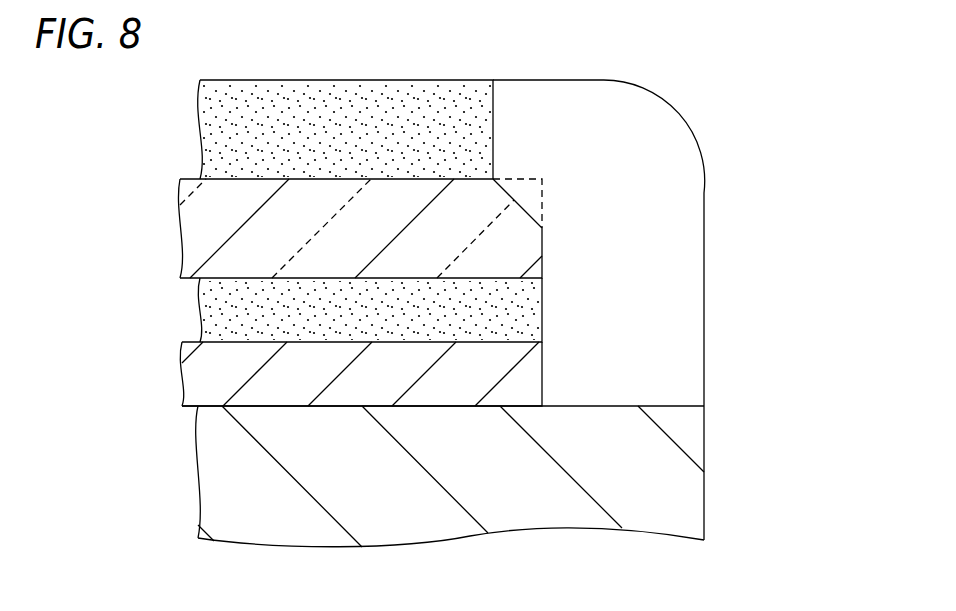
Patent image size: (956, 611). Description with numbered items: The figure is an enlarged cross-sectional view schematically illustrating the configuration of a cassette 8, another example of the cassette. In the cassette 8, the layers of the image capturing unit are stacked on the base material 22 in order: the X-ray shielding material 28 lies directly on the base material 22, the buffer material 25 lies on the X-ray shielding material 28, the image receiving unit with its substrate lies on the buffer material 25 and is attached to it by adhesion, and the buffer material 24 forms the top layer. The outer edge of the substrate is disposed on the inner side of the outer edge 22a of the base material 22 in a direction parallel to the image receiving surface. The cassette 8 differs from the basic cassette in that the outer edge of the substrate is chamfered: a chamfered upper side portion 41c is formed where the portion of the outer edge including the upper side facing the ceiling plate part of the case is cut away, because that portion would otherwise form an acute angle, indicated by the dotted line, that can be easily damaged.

The cassette 8 is at (718, 82).
The buffer material 24 is at (434, 122).
The chamfered upper side portion 41c is at (513, 227).
The buffer material 25 is at (528, 308).
The X-ray shielding material 28 is at (526, 378).
The base material 22 is at (404, 497).
The outer edge of the base material 22a is at (688, 493).